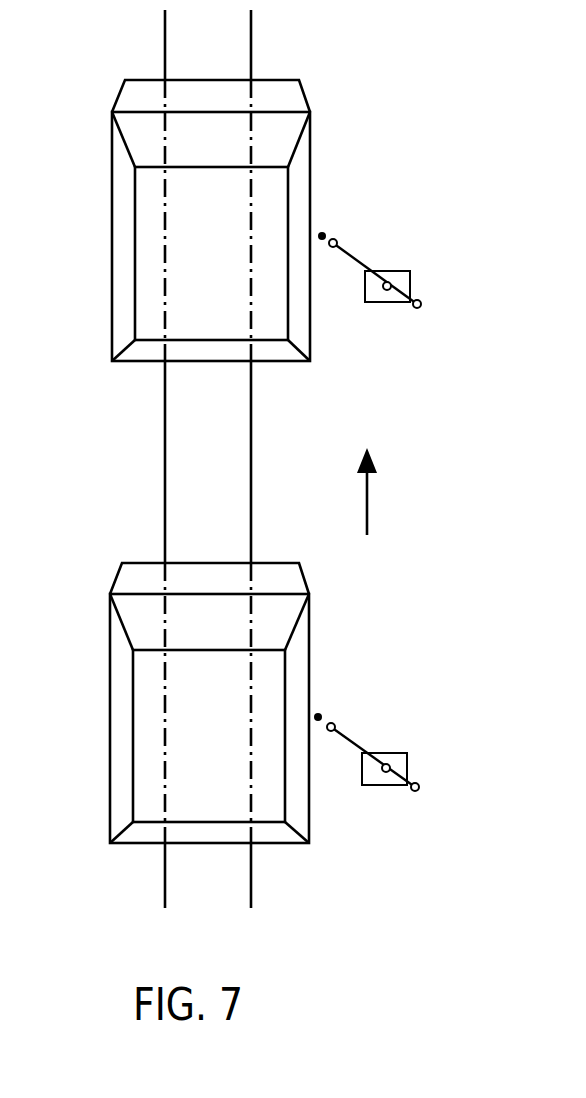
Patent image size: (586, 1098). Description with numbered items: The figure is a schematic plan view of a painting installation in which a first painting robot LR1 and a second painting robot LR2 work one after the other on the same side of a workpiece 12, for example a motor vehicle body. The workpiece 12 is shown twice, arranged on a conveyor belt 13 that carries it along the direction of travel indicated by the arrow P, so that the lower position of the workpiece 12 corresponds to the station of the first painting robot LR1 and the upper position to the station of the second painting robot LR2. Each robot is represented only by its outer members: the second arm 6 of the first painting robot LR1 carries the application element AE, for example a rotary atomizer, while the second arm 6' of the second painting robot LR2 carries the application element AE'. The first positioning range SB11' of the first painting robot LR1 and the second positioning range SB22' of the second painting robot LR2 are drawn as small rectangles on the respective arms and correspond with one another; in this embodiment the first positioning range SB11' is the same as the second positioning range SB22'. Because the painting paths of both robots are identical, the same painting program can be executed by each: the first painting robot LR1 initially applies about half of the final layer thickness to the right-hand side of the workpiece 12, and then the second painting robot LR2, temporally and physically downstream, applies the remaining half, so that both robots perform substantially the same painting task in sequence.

The workpiece 12 is at (112, 140).
The conveyor belt 13 is at (165, 478).
The second arm 6 is at (373, 739).
The second arm 6' is at (375, 257).
The application element AE is at (338, 685).
The application element AE' is at (345, 206).
The first positioning range SB11' is at (364, 795).
The second positioning range SB22' is at (370, 312).
The first painting robot LR1 is at (431, 703).
The second painting robot LR2 is at (434, 219).
The arrow P is at (380, 491).